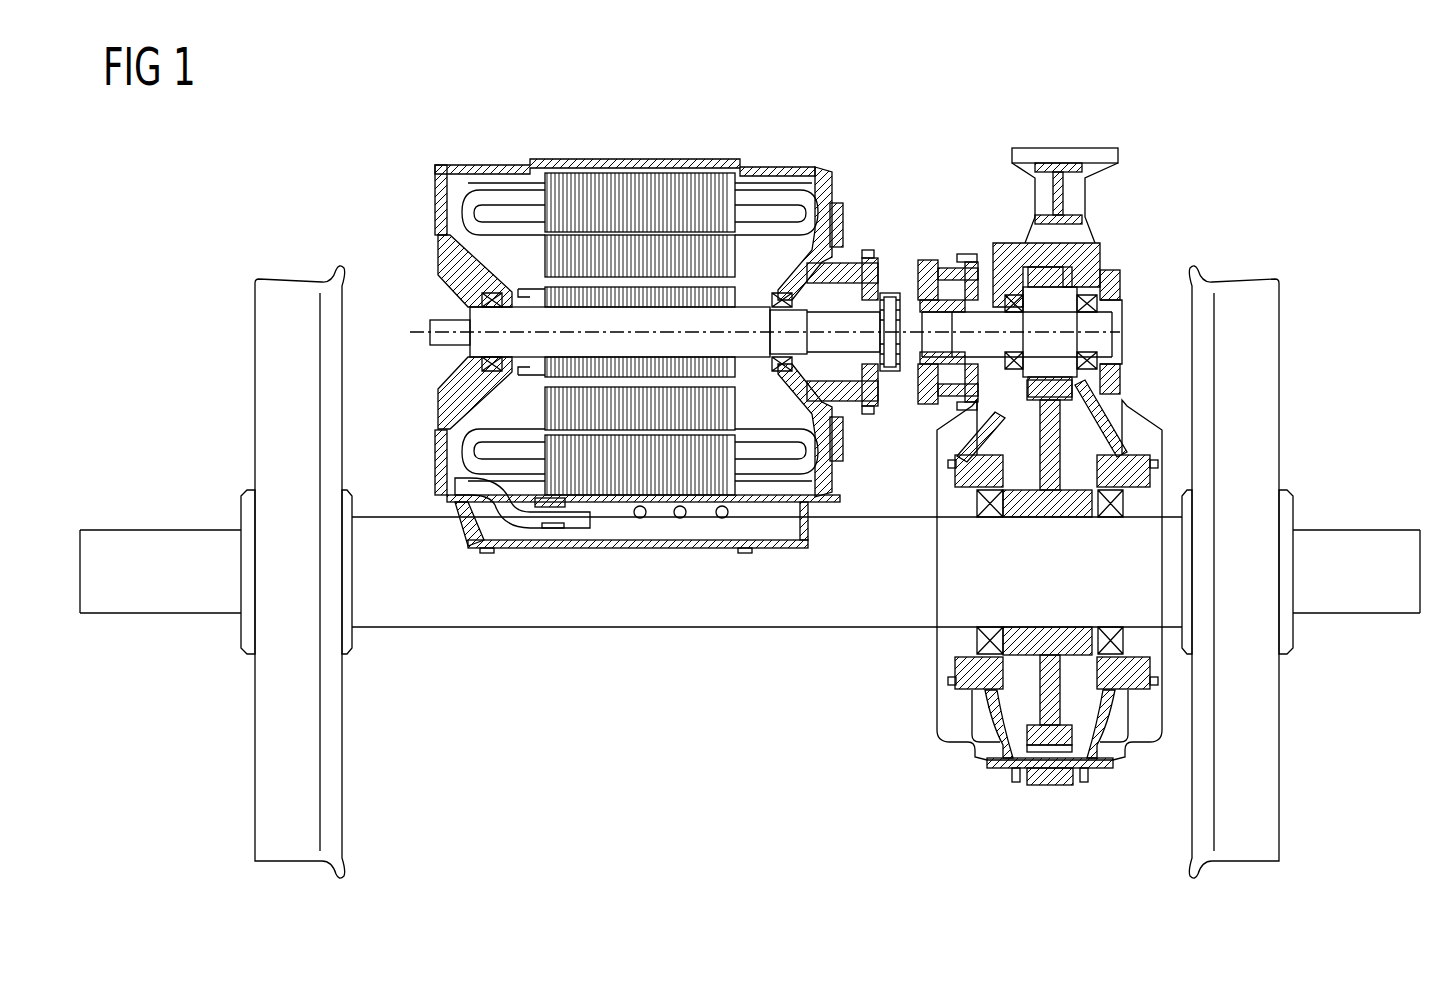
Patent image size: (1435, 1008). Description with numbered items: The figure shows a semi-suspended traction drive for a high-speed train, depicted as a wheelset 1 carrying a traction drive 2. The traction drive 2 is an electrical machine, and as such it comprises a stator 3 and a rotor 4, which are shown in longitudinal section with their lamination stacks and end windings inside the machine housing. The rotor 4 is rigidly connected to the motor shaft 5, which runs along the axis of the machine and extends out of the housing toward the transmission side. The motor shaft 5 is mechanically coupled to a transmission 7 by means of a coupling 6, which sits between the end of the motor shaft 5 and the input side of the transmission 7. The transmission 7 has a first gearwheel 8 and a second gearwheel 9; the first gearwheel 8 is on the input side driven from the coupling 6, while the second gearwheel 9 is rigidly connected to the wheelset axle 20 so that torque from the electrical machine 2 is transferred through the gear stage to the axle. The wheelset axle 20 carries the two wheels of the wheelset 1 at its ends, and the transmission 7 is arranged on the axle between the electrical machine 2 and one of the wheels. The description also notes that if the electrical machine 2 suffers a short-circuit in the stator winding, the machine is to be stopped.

The wheelset 1 is at (287, 201).
The traction drive 2 is at (627, 160).
The stator 3 is at (665, 190).
The rotor 4 is at (562, 250).
The motor shaft 5 is at (756, 322).
The coupling 6 is at (889, 293).
The transmission 7 is at (1071, 118).
The first gearwheel 8 is at (1117, 389).
The second gearwheel 9 is at (1048, 500).
The wheelset axle 20 is at (505, 615).